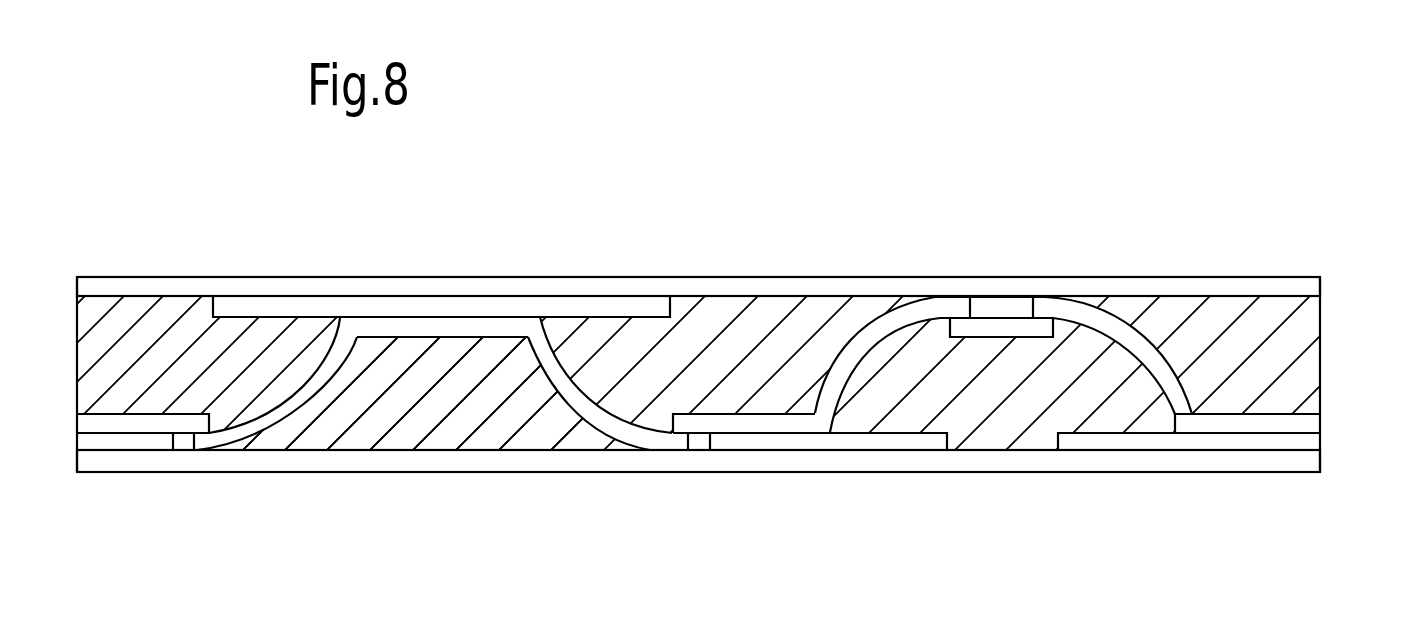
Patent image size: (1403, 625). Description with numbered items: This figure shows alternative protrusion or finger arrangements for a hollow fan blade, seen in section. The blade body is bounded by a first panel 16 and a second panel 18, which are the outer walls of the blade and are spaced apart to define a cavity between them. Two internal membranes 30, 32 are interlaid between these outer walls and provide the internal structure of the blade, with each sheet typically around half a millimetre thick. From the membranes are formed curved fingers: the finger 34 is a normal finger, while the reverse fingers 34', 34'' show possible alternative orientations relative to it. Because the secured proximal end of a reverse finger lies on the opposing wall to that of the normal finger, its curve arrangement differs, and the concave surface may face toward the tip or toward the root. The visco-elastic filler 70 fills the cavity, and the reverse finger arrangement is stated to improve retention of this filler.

The first panel 16 is at (1080, 460).
The second panel 18 is at (1168, 277).
The internal membrane 30 is at (1281, 441).
The internal membrane 32 is at (1307, 425).
The finger 34 is at (1001, 310).
The reverse finger 34' is at (1115, 375).
The reverse finger 34'' is at (434, 330).
The visco-elastic filler 70 is at (442, 403).